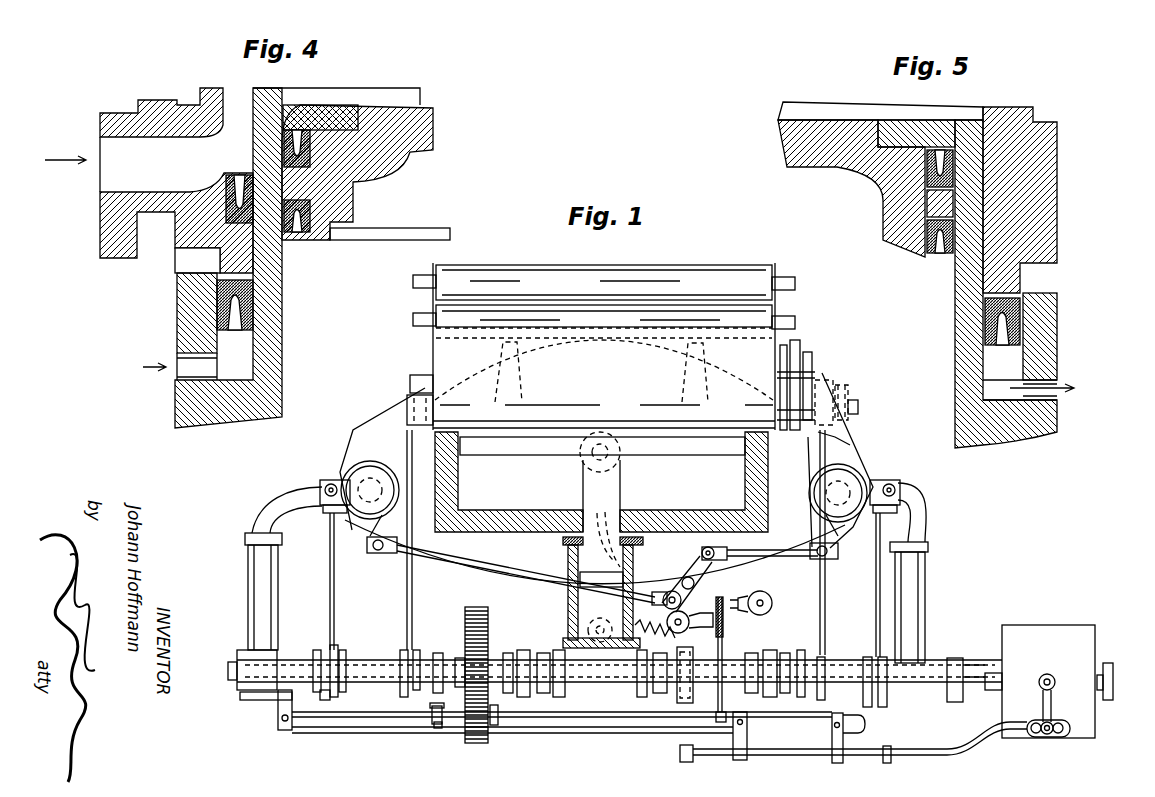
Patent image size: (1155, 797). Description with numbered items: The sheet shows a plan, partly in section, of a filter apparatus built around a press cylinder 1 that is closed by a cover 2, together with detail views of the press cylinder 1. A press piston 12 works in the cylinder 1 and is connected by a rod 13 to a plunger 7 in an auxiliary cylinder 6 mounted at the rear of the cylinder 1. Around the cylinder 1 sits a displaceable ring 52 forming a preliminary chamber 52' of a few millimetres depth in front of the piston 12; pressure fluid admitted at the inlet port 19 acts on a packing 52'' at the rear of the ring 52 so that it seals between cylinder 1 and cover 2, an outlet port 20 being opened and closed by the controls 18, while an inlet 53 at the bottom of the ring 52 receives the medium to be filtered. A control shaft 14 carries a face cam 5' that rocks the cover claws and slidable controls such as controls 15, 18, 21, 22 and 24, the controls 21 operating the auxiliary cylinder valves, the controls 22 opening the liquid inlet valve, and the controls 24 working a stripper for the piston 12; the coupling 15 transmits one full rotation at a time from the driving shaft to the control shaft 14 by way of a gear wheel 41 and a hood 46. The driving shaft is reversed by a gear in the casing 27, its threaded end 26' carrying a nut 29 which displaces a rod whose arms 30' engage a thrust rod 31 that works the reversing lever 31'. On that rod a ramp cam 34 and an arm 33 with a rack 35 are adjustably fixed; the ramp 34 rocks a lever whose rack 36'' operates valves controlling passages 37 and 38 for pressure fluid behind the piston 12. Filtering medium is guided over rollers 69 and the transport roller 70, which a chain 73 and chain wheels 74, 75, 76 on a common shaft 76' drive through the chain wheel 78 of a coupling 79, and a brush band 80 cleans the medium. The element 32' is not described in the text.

In FIG. 4, the press cylinder 1 is at (273, 345).
In FIG. 5, the press cylinder 1 is at (955, 288).
In FIG. 1, the press cylinder 1 is at (440, 478).
In FIG. 1, the cover 2 is at (455, 378).
In FIG. 1, the face cam 5' is at (695, 671).
In FIG. 1, the auxiliary cylinder 6 is at (572, 592).
In FIG. 1, the plunger 7 is at (583, 597).
In FIG. 4, the press piston 12 is at (398, 158).
In FIG. 5, the press piston 12 is at (848, 175).
In FIG. 1, the press piston 12 is at (710, 448).
In FIG. 1, the rod 13 is at (576, 553).
In FIG. 1, the control shaft 14 is at (352, 661).
In FIG. 1, the coupling 15 is at (455, 670).
In FIG. 1, the control 18 is at (760, 657).
In FIG. 4, the inlet port 19 is at (187, 363).
In FIG. 5, the outlet port 20 is at (1057, 378).
In FIG. 1, the control 21 is at (640, 698).
In FIG. 1, the control 22 is at (558, 698).
In FIG. 1, the control 24 is at (509, 650).
In FIG. 1, the screw-threaded end of driving shaft 26' is at (242, 654).
In FIG. 1, the reversing gear casing 27 is at (1085, 626).
In FIG. 1, the nut 29 is at (285, 650).
In FIG. 1, the arm 30' is at (839, 751).
In FIG. 1, the thrust rod 31 is at (860, 738).
In FIG. 1, the reversing lever 31' is at (1033, 698).
In FIG. 1, the slotted link 32' is at (1048, 748).
In FIG. 1, the arm 33 is at (440, 728).
In FIG. 1, the ramp cam 34 is at (496, 726).
In FIG. 1, the rack 35 is at (436, 718).
In FIG. 1, the rack 36'' is at (715, 617).
In FIG. 1, the passage 37 is at (622, 533).
In FIG. 1, the passage 38 is at (770, 598).
In FIG. 1, the gear wheel 41 is at (463, 636).
In FIG. 1, the hood 46 is at (432, 690).
In FIG. 4, the displaceable ring 52 is at (184, 262).
In FIG. 5, the displaceable ring 52 is at (1040, 200).
In FIG. 4, the preliminary chamber 52' is at (336, 115).
In FIG. 5, the preliminary chamber 52' is at (880, 114).
In FIG. 4, the packing 52'' is at (367, 231).
In FIG. 5, the packing 52'' is at (1046, 336).
In FIG. 4, the inlet 53 is at (105, 178).
In FIG. 1, the roller 69 is at (780, 306).
In FIG. 1, the transport roller 70 is at (780, 353).
In FIG. 1, the chain 73 is at (823, 629).
In FIG. 1, the chain wheel 74 is at (832, 392).
In FIG. 1, the chain wheel 75 is at (842, 446).
In FIG. 1, the chain wheel 76 is at (858, 402).
In FIG. 1, the common shaft 76' is at (875, 411).
In FIG. 1, the chain wheel 78 is at (800, 360).
In FIG. 1, the coupling 79 is at (806, 373).
In FIG. 1, the brush band 80 is at (738, 266).